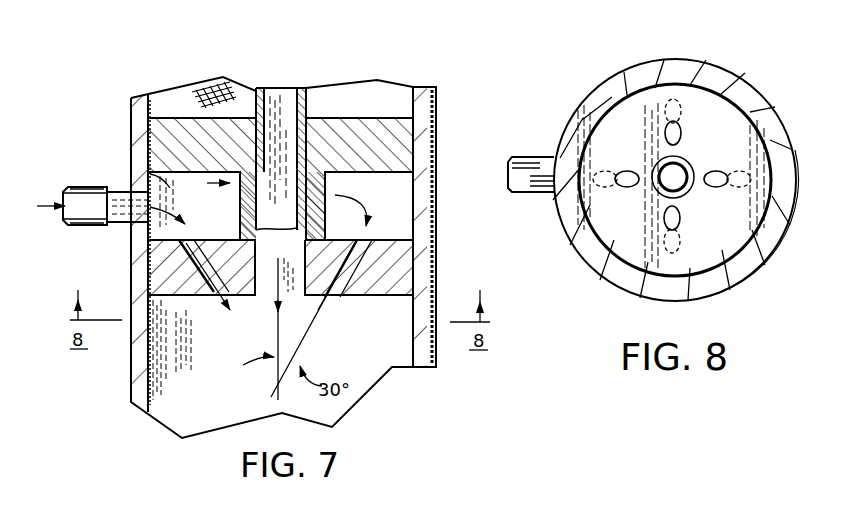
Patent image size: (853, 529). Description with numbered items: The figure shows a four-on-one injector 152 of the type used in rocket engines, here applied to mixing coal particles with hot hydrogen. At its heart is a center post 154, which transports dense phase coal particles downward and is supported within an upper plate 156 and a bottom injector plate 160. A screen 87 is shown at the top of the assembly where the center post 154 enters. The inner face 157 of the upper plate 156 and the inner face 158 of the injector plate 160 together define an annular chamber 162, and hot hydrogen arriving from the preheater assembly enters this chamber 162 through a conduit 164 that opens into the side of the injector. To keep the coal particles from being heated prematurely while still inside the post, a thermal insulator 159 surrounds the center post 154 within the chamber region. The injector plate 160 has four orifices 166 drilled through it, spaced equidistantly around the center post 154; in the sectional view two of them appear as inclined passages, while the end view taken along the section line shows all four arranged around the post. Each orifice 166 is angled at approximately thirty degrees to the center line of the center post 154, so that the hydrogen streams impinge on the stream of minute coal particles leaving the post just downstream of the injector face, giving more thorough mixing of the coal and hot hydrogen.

In FIG. 7, the mixing head assembly 152 is at (443, 92).
In FIG. 7, the center post 154 is at (283, 98).
In FIG. 8, the center post 154 is at (688, 161).
In FIG. 7, the upper plate 156 is at (348, 126).
In FIG. 7, the screen mesh 87 is at (204, 77).
In FIG. 7, the annular chamber 162 is at (134, 152).
In FIG. 7, the conduit 164 is at (118, 222).
In FIG. 8, the conduit 164 is at (522, 156).
In FIG. 7, the inner face of upper plate 157 is at (385, 187).
In FIG. 7, the thermal insulator 159 is at (350, 212).
In FIG. 7, the inner face of injector plate 158 is at (398, 238).
In FIG. 7, the injector plate 160 is at (390, 270).
In FIG. 8, the injector plate 160 is at (758, 164).
In FIG. 7, the orifices 166 is at (198, 256).
In FIG. 8, the orifices 166 is at (680, 216).